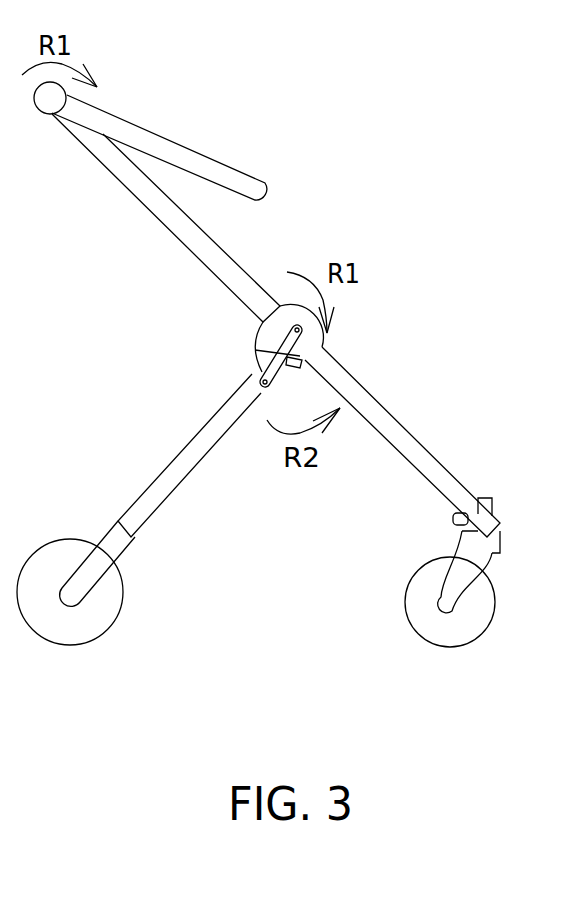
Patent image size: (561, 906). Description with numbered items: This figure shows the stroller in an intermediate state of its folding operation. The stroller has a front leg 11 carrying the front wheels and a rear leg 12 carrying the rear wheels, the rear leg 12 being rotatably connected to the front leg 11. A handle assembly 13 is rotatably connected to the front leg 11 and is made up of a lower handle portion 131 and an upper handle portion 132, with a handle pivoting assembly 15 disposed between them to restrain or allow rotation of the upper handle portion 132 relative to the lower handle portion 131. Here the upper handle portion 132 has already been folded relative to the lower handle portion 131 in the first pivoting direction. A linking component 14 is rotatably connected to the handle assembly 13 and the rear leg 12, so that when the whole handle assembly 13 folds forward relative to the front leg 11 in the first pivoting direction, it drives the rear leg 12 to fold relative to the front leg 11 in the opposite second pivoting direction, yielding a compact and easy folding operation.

The front leg 11 is at (385, 428).
The rear leg 12 is at (177, 465).
The handle assembly 13 is at (315, 72).
The lower handle portion 131 is at (233, 271).
The upper handle portion 132 is at (208, 172).
The linking component 14 is at (257, 366).
The handle pivoting assembly 15 is at (47, 105).